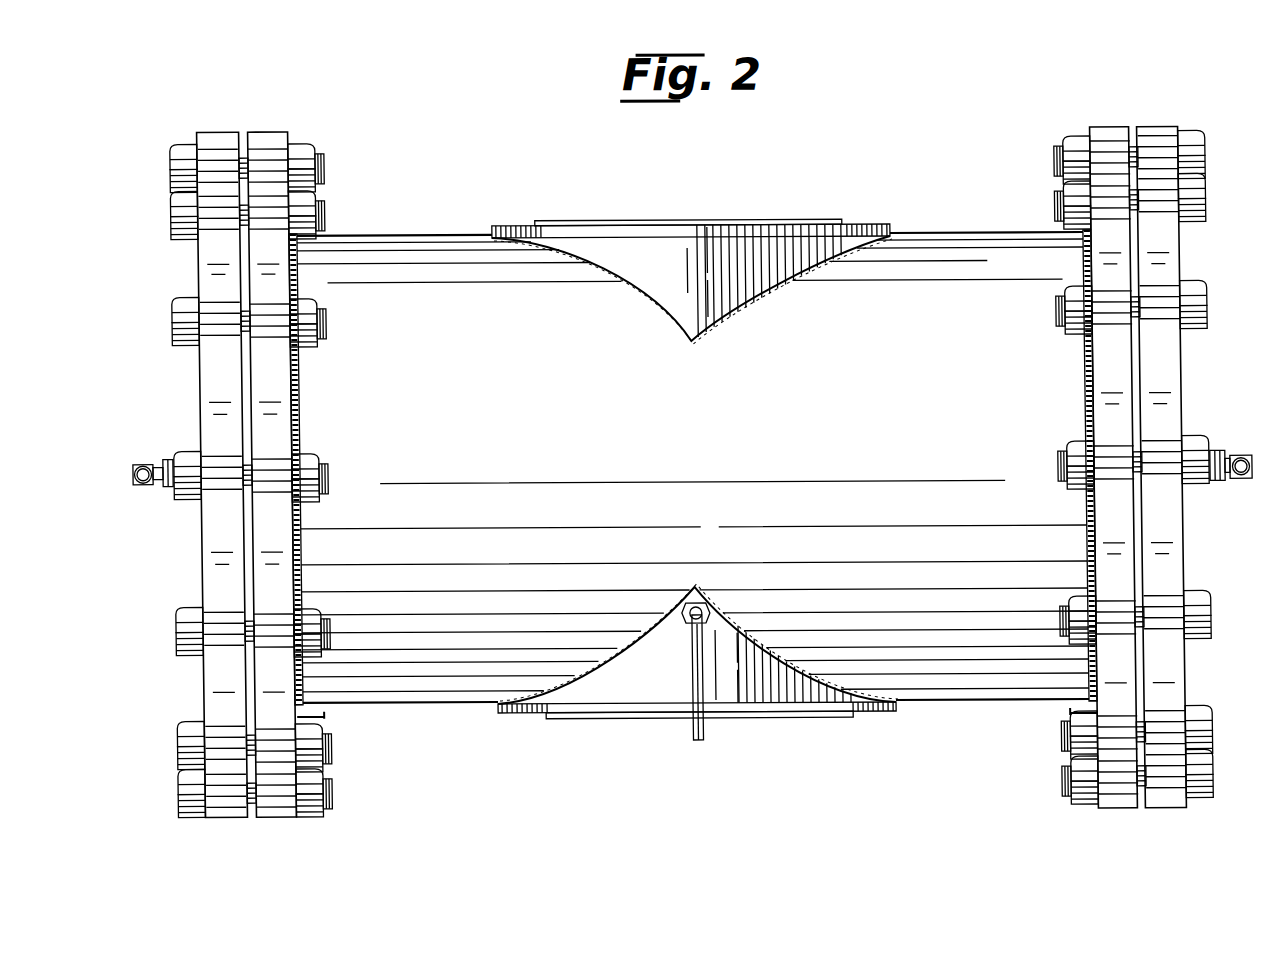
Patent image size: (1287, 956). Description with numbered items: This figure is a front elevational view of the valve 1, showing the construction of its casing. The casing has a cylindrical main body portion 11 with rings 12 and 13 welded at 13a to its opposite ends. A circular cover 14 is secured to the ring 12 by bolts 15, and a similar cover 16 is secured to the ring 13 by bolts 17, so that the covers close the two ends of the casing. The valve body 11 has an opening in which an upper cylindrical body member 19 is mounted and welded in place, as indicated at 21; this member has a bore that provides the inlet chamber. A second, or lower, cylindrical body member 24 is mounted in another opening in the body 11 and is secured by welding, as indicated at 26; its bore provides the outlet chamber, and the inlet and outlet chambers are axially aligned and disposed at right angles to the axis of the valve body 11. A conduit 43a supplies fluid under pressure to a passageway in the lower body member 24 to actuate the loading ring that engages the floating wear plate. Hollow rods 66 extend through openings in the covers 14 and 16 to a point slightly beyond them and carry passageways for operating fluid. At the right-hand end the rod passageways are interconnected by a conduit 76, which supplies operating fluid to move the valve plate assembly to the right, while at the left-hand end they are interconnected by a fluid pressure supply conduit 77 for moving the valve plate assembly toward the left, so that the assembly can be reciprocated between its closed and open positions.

The valve 1 is at (449, 222).
The cylindrical main body portion 11 is at (978, 246).
The ring 12 is at (280, 140).
The ring 13 is at (1110, 139).
The weld 13a is at (301, 356).
The circular cover 14 is at (224, 140).
The bolts 15 is at (182, 207).
The cover 16 is at (1168, 139).
The bolts 17 is at (1209, 192).
The upper cylindrical body member 19 is at (826, 222).
The weld 21 is at (795, 259).
The lower cylindrical body member 24 is at (759, 715).
The weld 26 is at (788, 669).
The conduit 43a is at (686, 731).
The rods 66 is at (166, 459).
The conduit 76 is at (1246, 457).
The fluid pressure supply conduit 77 is at (135, 484).